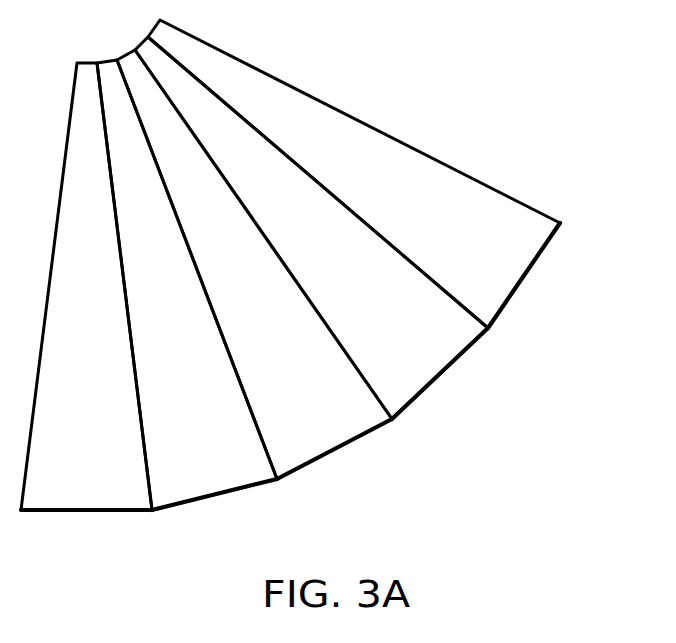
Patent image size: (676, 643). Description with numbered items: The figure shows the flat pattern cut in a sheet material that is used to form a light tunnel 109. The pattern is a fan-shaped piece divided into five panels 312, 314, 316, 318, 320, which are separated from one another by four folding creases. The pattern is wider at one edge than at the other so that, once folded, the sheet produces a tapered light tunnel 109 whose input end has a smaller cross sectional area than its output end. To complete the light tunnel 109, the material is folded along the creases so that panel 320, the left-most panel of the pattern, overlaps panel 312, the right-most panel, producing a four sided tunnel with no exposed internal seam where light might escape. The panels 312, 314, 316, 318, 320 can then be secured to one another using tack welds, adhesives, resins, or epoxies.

The light tunnel 109 is at (309, 292).
The panel 312 is at (517, 272).
The panel 314 is at (433, 365).
The panel 316 is at (332, 438).
The panel 318 is at (213, 485).
The panel 320 is at (83, 500).